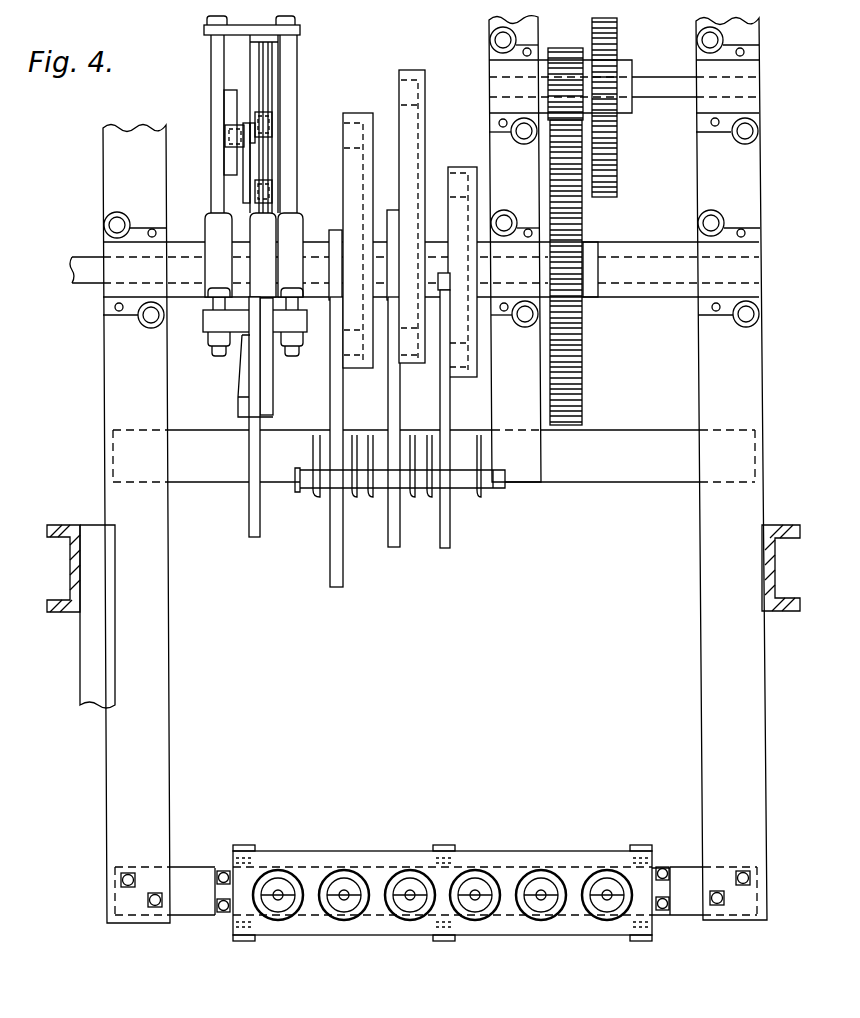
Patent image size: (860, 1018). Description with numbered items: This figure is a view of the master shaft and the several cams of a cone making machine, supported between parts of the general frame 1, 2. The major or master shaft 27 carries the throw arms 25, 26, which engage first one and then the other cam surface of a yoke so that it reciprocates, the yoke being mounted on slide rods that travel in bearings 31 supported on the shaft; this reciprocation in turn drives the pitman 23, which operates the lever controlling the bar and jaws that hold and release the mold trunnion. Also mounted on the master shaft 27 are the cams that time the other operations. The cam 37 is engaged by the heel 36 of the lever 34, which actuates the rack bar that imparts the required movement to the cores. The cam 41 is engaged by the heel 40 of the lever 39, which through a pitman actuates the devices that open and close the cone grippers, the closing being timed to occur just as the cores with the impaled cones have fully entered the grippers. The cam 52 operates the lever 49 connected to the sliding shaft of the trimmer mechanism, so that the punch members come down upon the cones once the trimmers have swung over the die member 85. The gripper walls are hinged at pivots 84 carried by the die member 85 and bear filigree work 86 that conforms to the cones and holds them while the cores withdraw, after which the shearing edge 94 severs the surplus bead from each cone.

The frame 1 is at (104, 358).
The frame 2 is at (77, 516).
The pitman 23 is at (249, 512).
The throw arm 25 is at (226, 141).
The throw arm 26 is at (274, 128).
The master shaft 27 is at (83, 262).
The bearings 31 is at (205, 224).
The lever 34 is at (330, 552).
The heel 36 is at (332, 232).
The cam 37 is at (363, 113).
The lever 39 is at (396, 548).
The heel 40 is at (392, 210).
The cam 41 is at (420, 72).
The lever 49 is at (450, 533).
The cam 52 is at (463, 168).
The hinges 84 is at (248, 845).
The die member 85 is at (392, 852).
The filigree work 86 is at (340, 870).
The shearing edge 94 is at (302, 913).